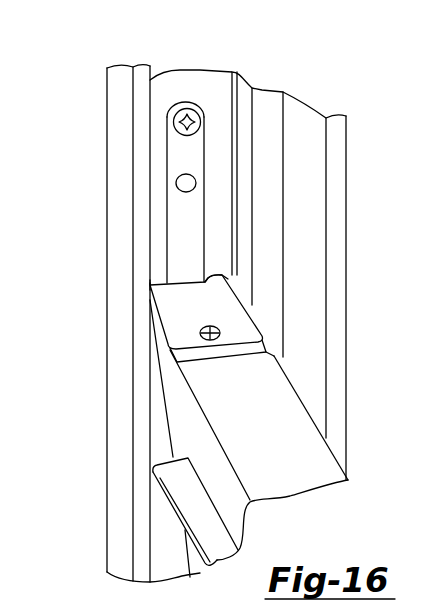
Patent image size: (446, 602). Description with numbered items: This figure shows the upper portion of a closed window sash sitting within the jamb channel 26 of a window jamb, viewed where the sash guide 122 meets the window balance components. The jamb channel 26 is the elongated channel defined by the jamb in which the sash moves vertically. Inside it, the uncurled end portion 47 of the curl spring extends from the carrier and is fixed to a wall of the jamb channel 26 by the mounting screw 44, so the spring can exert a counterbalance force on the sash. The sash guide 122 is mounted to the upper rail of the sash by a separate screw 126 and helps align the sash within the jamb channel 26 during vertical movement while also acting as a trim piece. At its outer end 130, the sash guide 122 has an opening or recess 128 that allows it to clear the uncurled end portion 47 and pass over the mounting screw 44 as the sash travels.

The jamb channel 26 is at (162, 93).
The mounting screw 44 is at (173, 125).
The uncurled end portion 47 is at (183, 211).
The outer end 130 is at (160, 277).
The opening or recess 128 is at (195, 283).
The screw 126 is at (222, 331).
The sash guide 122 is at (180, 338).